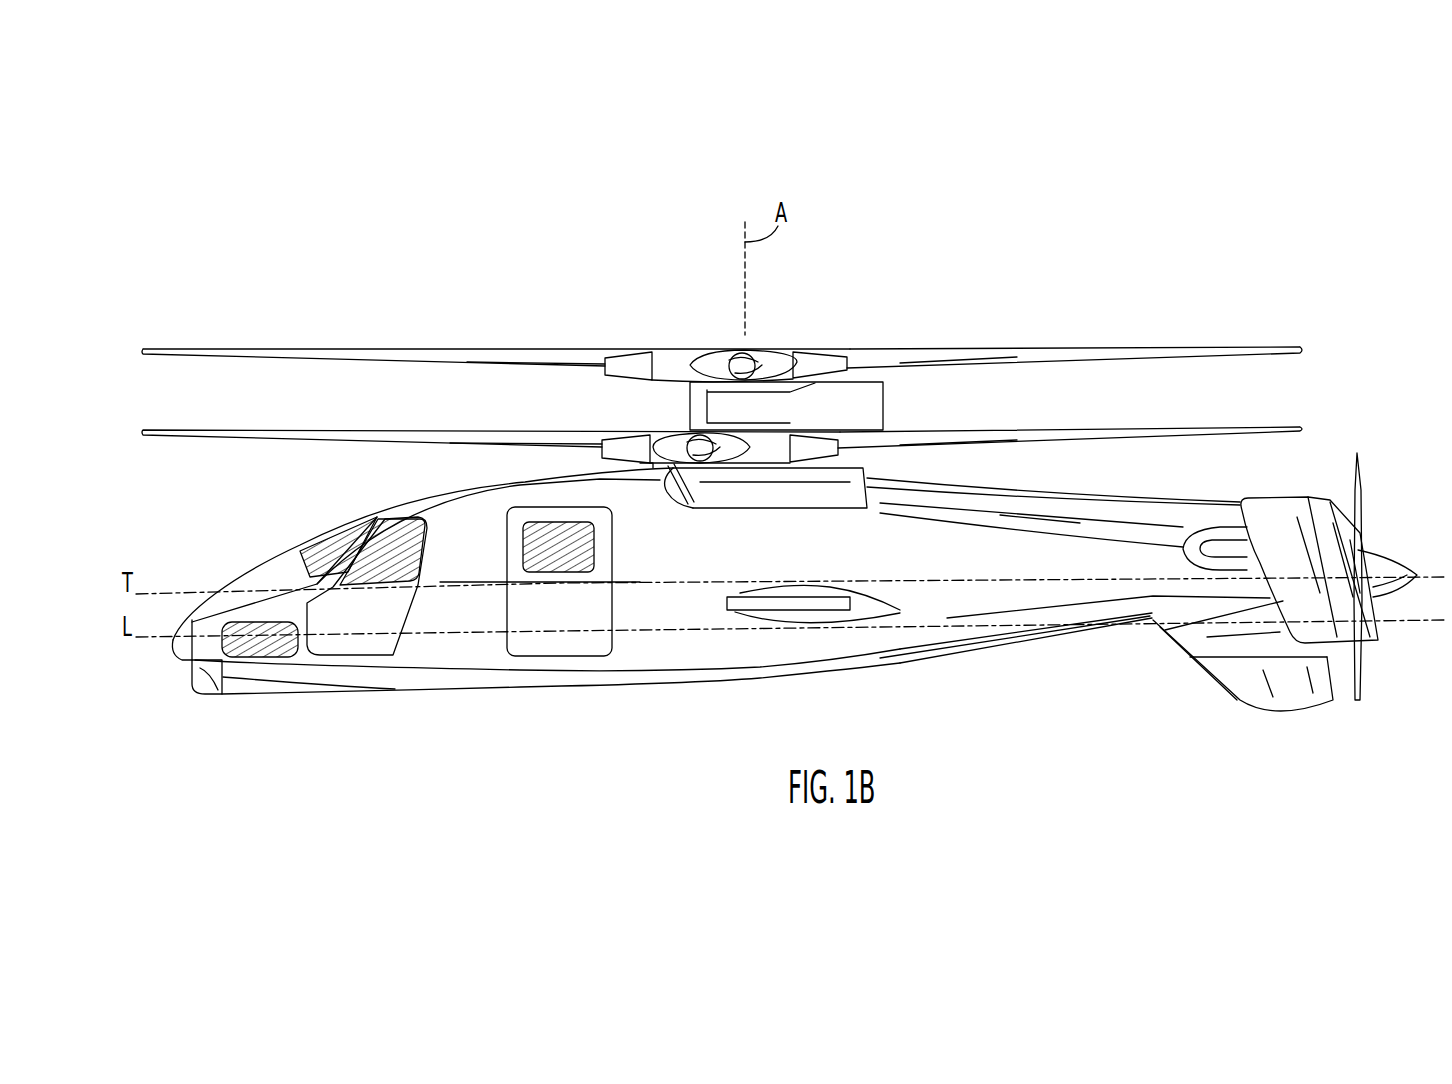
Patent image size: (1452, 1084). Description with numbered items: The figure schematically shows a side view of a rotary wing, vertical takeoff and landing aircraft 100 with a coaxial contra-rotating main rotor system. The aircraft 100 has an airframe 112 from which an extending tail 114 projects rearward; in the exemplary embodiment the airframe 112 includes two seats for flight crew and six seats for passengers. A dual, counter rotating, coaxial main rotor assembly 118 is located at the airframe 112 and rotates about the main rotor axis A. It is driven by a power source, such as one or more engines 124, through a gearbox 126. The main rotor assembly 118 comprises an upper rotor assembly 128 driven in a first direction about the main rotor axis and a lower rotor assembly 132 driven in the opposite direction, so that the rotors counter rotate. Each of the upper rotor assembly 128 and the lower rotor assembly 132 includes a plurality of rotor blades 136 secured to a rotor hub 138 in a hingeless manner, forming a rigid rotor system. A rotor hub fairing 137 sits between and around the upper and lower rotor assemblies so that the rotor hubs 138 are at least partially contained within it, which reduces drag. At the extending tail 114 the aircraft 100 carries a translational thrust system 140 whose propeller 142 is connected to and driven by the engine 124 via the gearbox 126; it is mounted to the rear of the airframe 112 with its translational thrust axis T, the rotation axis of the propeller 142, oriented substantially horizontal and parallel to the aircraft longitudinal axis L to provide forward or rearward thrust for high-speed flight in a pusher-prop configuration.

The rotary wing VTOL aircraft 100 is at (342, 178).
The airframe 112 is at (560, 690).
The extending tail 114 is at (988, 650).
The main rotor assembly 118 is at (662, 297).
The engine 124 is at (840, 495).
The gearbox 126 is at (717, 488).
The upper rotor assembly 128 is at (272, 336).
The lower rotor assembly 132 is at (242, 460).
The rotor blades 136 is at (1080, 347).
The rotor hub fairing 137 is at (883, 397).
The rotor hub 138 is at (752, 347).
The translational thrust system 140 is at (1340, 768).
The propeller 142 is at (1362, 497).